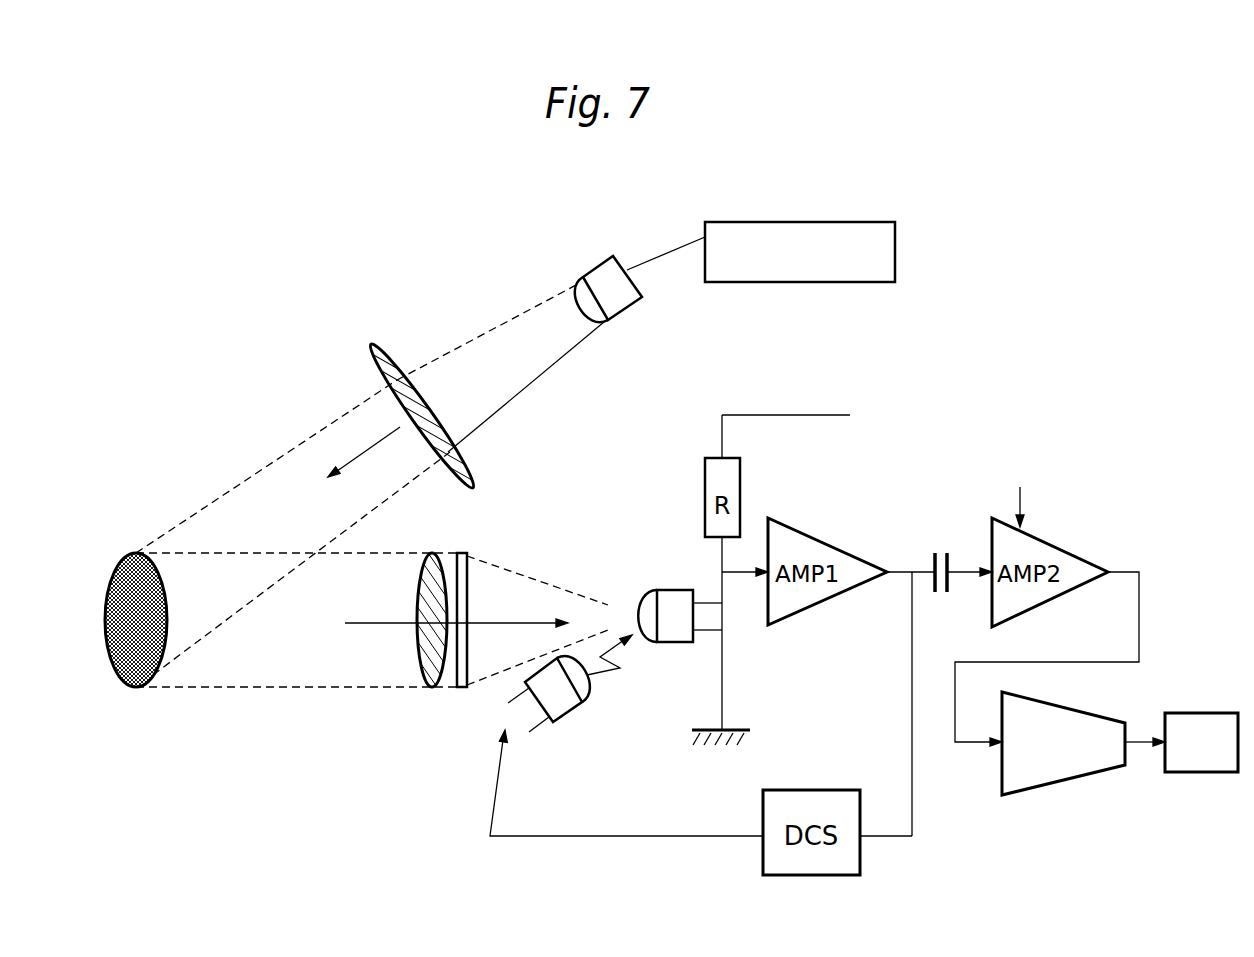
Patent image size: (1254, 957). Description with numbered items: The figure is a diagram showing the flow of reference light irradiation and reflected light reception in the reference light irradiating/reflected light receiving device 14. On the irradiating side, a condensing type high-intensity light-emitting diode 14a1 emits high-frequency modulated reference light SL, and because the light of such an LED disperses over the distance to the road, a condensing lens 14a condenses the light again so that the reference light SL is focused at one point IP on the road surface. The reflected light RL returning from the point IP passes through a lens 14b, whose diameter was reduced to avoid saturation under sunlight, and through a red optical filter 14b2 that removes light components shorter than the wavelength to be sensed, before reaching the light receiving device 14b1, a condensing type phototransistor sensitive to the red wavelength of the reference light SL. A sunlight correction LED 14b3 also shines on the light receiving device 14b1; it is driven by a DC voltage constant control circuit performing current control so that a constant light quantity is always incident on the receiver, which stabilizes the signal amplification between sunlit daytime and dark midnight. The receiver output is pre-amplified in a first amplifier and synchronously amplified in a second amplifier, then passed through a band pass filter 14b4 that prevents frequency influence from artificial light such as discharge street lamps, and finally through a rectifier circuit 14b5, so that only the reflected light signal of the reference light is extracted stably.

The reference light irradiating/reflected light receiving device 14 is at (781, 213).
The condensing lens 14a is at (397, 382).
The condensing type high-intensity light-emitting diode 14a1 is at (595, 268).
The lens 14b is at (422, 672).
The light receiving device 14b1 is at (658, 590).
The red optical filter 14b2 is at (468, 552).
The sunlight correction LED 14b3 is at (577, 712).
The band pass filter 14b4 is at (1058, 765).
The rectifier circuit 14b5 is at (1197, 760).
The point on the road surface IP is at (133, 553).
The reference light SL is at (366, 450).
The reflected light RL is at (372, 622).